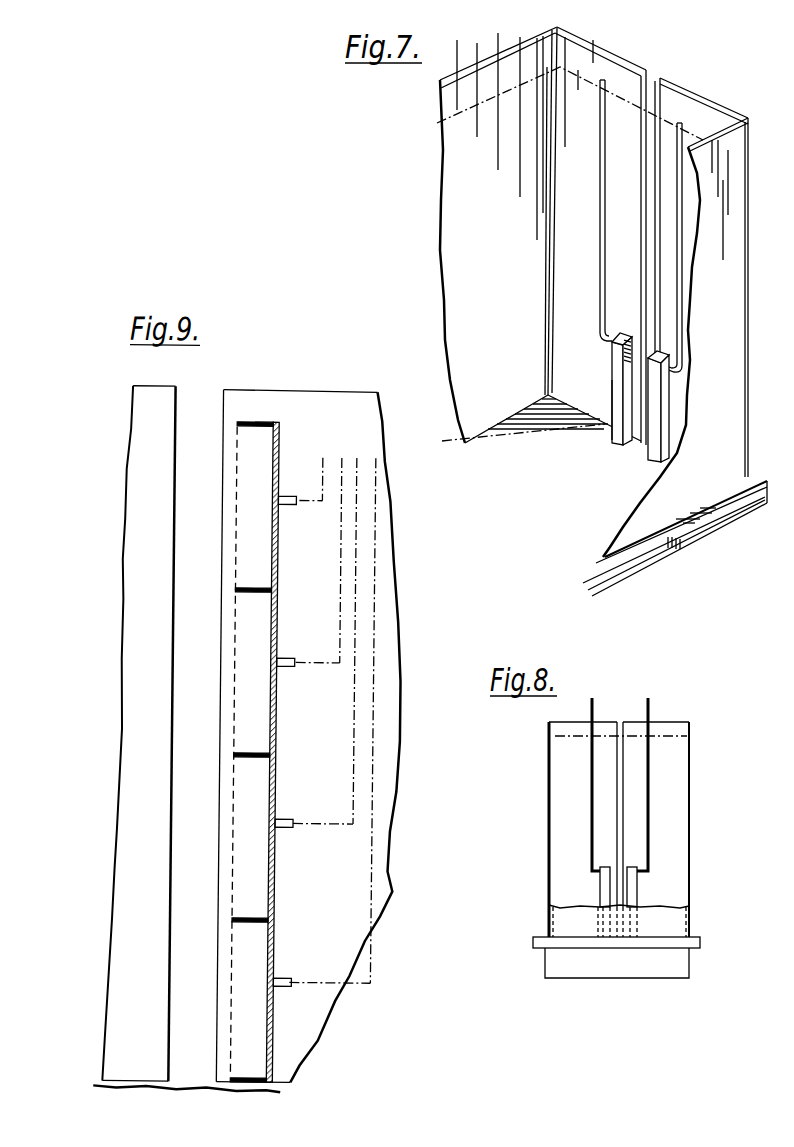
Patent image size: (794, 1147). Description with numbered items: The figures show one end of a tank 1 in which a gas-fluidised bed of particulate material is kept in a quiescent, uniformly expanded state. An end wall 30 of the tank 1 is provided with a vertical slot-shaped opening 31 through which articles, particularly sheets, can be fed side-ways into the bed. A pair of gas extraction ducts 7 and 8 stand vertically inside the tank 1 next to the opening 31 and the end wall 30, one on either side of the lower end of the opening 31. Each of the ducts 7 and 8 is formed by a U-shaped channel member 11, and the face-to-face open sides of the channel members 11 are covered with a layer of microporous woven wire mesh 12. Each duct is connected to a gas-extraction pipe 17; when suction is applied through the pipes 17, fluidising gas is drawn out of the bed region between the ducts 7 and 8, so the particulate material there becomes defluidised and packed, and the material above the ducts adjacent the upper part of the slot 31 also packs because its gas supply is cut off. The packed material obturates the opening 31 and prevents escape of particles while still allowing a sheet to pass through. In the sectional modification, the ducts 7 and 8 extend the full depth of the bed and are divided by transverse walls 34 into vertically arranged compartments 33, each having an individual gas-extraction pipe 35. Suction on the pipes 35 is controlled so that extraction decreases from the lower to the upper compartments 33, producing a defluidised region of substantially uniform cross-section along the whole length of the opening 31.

In FIG. 7, the tank 1 is at (737, 157).
In FIG. 8, the tank 1 is at (692, 778).
In FIG. 9, the tank 1 is at (137, 417).
In FIG. 7, the gas extraction duct 7 is at (606, 369).
In FIG. 8, the gas extraction duct 7 is at (592, 887).
In FIG. 9, the gas extraction duct 7 is at (301, 752).
In FIG. 7, the gas extraction duct 8 is at (672, 397).
In FIG. 8, the gas extraction duct 8 is at (643, 889).
In FIG. 9, the gas extraction duct 8 is at (301, 752).
In FIG. 7, the U-shaped channel member 11 is at (614, 390).
In FIG. 7, the layer of microporous woven wire mesh 12 is at (630, 337).
In FIG. 7, the gas-extraction pipe 17 is at (603, 145).
In FIG. 8, the gas-extraction pipe 17 is at (588, 800).
In FIG. 7, the end wall 30 is at (710, 110).
In FIG. 7, the vertical slot-shaped opening 31 is at (653, 81).
In FIG. 8, the vertical slot-shaped opening 31 is at (620, 722).
In FIG. 9, the vertical slot-shaped opening 31 is at (200, 410).
In FIG. 9, the compartment 33 is at (247, 667).
In FIG. 9, the transverse wall 34 is at (247, 585).
In FIG. 9, the gas-extraction pipe 35 is at (306, 495).